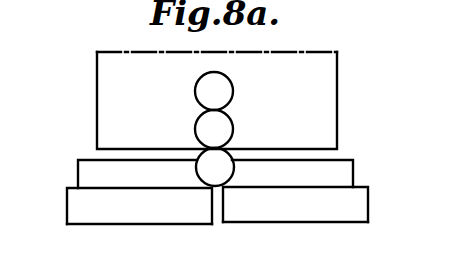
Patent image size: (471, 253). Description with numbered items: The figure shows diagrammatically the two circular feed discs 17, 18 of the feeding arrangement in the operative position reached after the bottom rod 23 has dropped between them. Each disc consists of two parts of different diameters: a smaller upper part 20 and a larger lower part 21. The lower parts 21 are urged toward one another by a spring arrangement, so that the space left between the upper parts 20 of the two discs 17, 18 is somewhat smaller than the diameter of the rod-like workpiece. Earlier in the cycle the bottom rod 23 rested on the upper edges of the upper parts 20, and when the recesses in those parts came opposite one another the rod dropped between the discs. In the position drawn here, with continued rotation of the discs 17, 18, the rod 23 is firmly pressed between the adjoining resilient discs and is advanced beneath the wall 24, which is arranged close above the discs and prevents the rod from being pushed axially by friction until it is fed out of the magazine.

The wall 24 is at (103, 104).
The bottom rod 23 is at (224, 160).
The upper part 20 is at (86, 168).
The lower part 21 is at (140, 217).
The circular disc 17 is at (100, 224).
The circular disc 18 is at (352, 225).